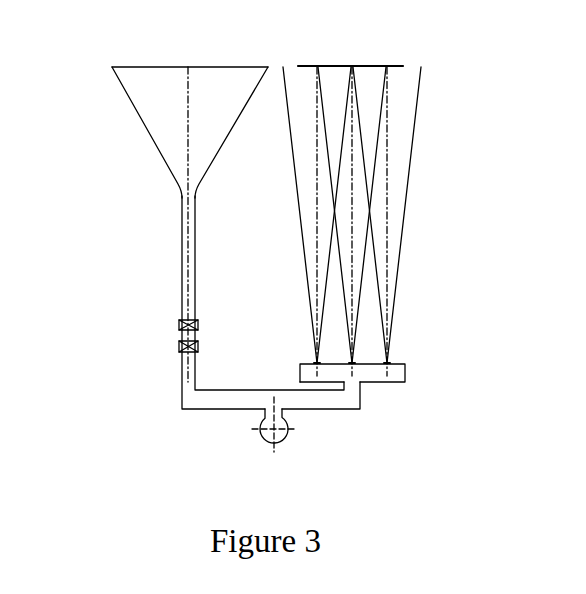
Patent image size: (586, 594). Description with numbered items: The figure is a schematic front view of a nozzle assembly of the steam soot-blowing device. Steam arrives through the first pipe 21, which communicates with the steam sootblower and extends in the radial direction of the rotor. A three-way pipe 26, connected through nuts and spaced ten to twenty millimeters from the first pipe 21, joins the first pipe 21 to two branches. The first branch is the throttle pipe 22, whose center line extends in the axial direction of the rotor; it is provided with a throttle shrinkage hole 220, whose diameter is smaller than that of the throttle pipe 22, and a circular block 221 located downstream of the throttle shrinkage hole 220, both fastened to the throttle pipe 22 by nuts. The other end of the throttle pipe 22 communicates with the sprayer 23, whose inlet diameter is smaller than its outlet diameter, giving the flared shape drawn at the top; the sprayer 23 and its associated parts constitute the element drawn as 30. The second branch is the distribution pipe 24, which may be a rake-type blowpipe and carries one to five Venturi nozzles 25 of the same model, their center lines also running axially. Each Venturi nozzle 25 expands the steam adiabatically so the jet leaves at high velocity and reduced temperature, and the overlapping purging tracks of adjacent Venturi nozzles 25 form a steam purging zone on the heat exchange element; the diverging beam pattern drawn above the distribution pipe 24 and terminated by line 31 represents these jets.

The hopper 30 is at (176, 195).
The sprayer 23 is at (170, 113).
The throttle pipe 22 is at (252, 328).
The block 221 is at (181, 331).
The throttle shrinkage hole 220 is at (182, 353).
The three-way pipe 26 is at (290, 399).
The first pipe 21 is at (280, 428).
The light source 31 is at (340, 64).
The distribution pipe 24 is at (362, 377).
The Venturi nozzle 25 is at (388, 361).